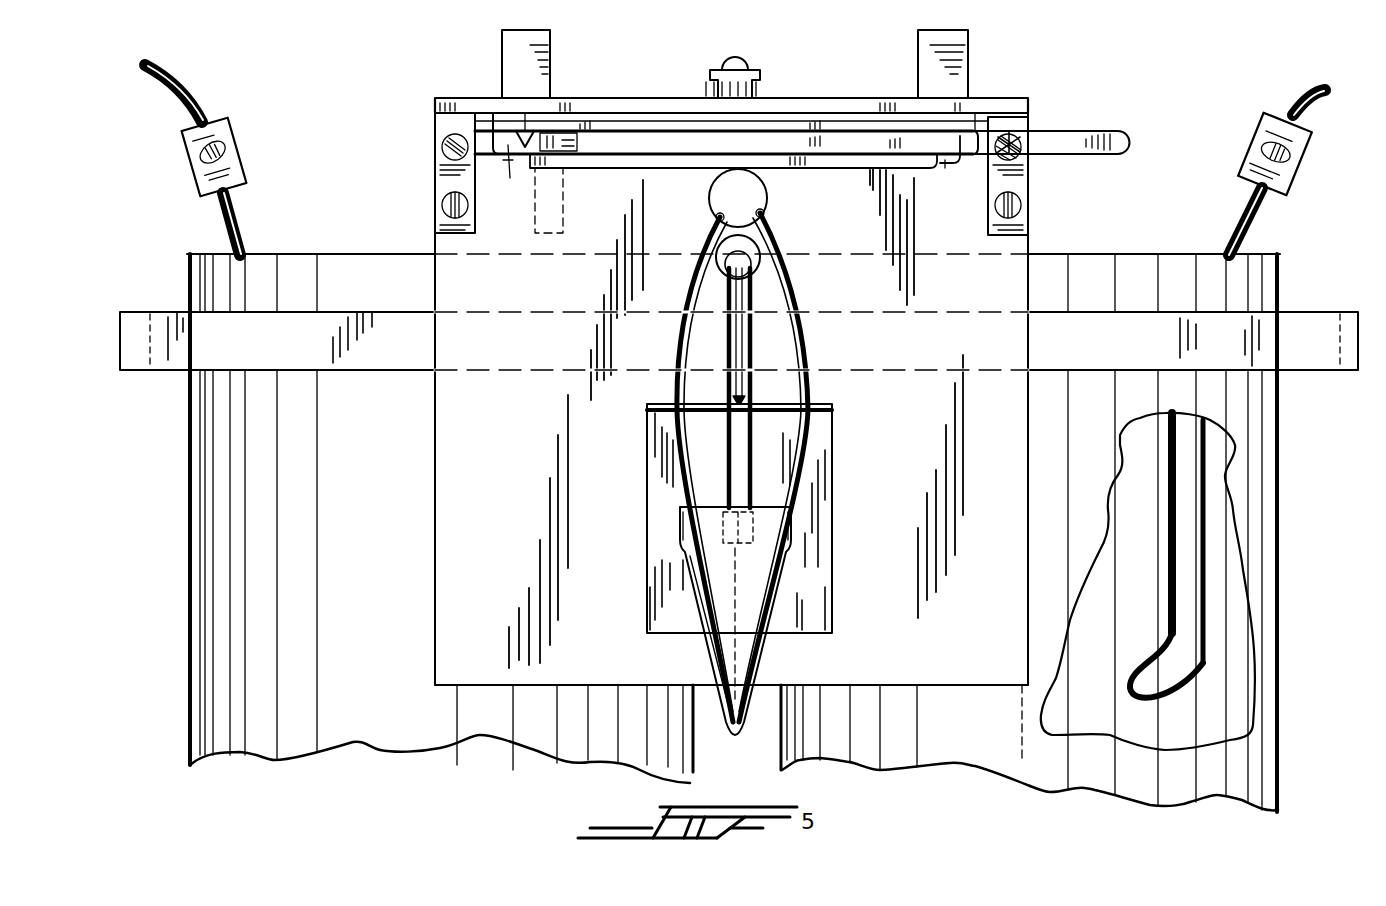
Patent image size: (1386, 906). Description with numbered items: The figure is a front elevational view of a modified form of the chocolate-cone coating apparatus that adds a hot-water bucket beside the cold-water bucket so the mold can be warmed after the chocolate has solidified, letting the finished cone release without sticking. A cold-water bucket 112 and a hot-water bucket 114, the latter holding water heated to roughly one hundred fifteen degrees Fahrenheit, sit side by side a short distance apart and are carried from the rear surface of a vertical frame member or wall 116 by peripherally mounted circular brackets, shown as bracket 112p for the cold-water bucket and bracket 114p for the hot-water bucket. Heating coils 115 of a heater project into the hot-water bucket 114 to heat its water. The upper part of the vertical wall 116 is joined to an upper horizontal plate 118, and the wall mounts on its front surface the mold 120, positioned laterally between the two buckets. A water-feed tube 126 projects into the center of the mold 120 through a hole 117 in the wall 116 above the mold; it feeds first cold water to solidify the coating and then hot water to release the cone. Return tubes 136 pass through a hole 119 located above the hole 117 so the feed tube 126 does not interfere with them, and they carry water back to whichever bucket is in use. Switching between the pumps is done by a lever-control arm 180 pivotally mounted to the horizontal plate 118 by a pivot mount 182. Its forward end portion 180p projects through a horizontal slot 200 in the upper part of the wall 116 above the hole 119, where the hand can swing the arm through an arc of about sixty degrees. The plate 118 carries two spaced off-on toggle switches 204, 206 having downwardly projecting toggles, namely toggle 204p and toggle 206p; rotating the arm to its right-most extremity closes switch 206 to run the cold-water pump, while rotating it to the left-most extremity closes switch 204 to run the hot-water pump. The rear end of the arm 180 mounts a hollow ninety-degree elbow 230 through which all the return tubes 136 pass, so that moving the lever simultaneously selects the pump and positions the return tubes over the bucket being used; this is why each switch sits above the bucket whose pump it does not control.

The cold-water bucket 112 is at (330, 258).
The left support bar 112p is at (153, 313).
The hot-water bucket 114 is at (1086, 258).
The circular bracket 114p is at (1280, 313).
The heating coils 115 is at (1178, 568).
The vertical frame member 116 is at (900, 454).
The hole 117 is at (737, 243).
The horizontal frame member 118 is at (859, 103).
The hole 119 is at (740, 193).
The mold 120 is at (756, 662).
The water-feed tube 126 is at (738, 357).
The return tubes 136 is at (697, 289).
The lever-control arm 180 is at (1035, 133).
The forward end portion 180p is at (1107, 132).
The pivot mount 182 is at (768, 92).
The horizontal slot 200 is at (499, 173).
The toggle switch 204 is at (507, 52).
The toggle 204p is at (527, 130).
The toggle switch 206 is at (957, 39).
The toggle 206p is at (943, 123).
The elbow 230 is at (570, 133).